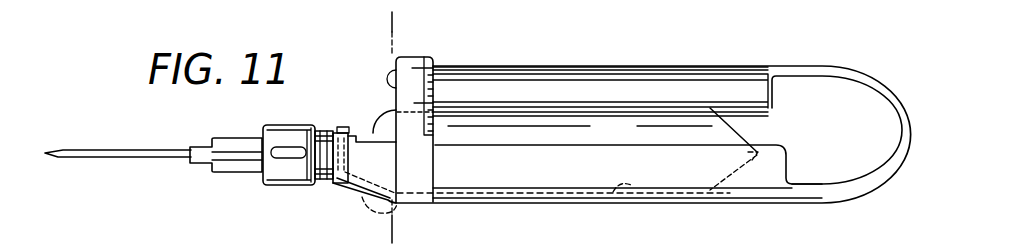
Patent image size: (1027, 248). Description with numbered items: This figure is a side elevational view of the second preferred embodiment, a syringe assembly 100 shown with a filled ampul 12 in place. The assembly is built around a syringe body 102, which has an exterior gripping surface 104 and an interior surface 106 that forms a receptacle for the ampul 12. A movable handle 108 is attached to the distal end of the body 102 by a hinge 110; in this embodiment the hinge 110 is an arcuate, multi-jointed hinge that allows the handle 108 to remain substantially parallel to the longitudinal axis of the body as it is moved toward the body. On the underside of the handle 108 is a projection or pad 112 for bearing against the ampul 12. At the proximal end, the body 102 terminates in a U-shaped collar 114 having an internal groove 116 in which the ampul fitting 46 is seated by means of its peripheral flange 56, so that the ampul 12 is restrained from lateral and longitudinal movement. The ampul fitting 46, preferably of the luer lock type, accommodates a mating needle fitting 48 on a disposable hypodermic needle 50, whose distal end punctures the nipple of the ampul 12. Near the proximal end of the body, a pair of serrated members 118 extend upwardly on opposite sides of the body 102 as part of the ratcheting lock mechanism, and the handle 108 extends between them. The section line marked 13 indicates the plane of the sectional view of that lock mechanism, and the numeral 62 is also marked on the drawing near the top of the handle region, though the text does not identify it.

The ampul 12 is at (358, 137).
The section line 13- 13 is at (384, 230).
The ampul fitting 46 is at (280, 125).
The needle fitting 48 is at (236, 126).
The hypodermic needle 50 is at (123, 148).
The peripheral flange 56 is at (342, 127).
The plunger 62 is at (542, 0).
The syringe assembly 100 is at (806, 60).
The syringe body 102 is at (772, 166).
The exterior gripping surface 104 is at (750, 203).
The interior surface 106 is at (640, 190).
The movable handle 108 is at (663, 66).
The hinge 110 is at (873, 77).
The pad 112 is at (496, 66).
The U-shaped collar 114 is at (328, 179).
The internal groove 116 is at (392, 213).
The serrated members 118 is at (428, 57).